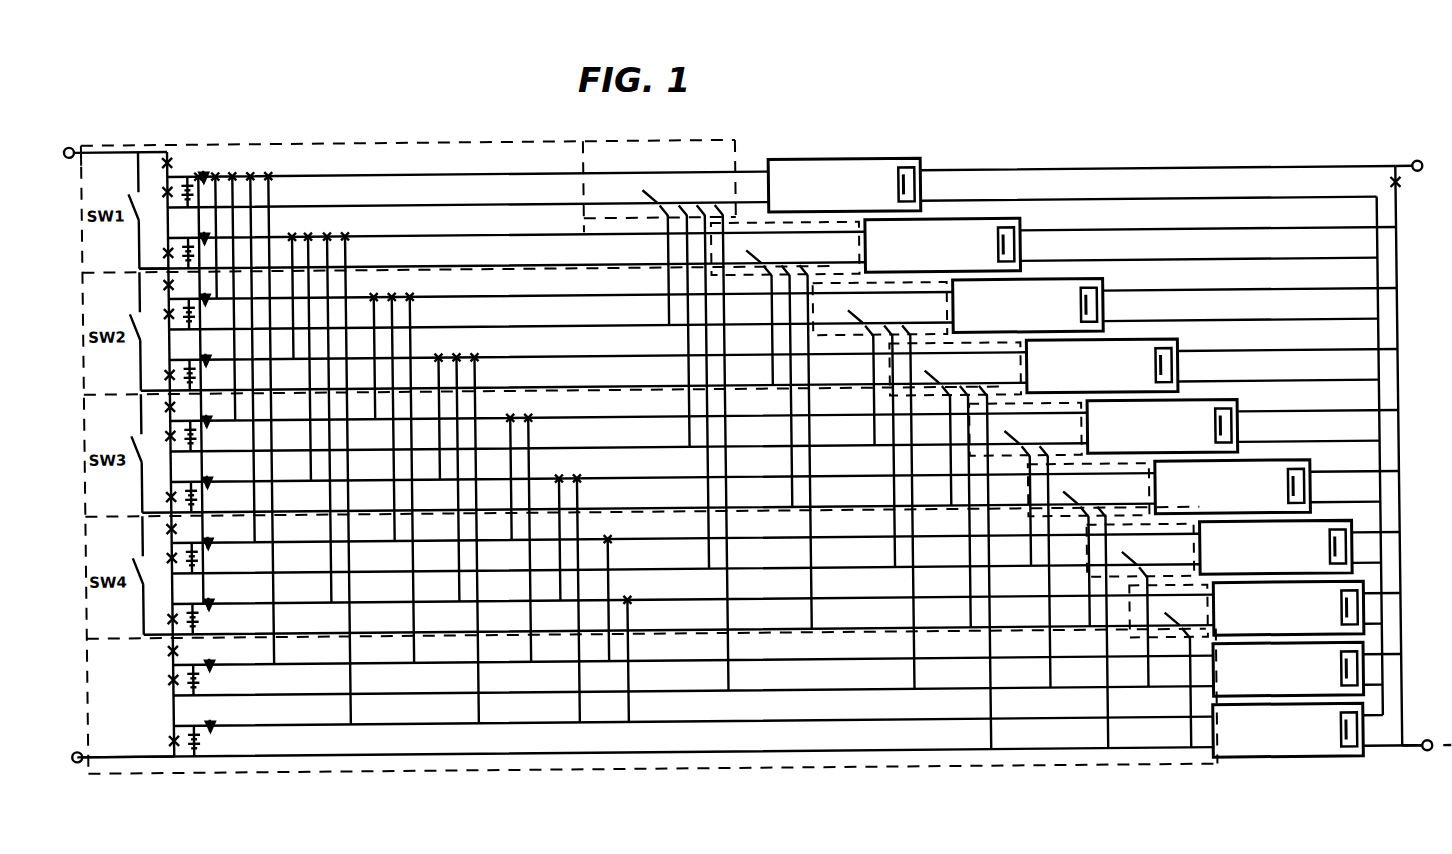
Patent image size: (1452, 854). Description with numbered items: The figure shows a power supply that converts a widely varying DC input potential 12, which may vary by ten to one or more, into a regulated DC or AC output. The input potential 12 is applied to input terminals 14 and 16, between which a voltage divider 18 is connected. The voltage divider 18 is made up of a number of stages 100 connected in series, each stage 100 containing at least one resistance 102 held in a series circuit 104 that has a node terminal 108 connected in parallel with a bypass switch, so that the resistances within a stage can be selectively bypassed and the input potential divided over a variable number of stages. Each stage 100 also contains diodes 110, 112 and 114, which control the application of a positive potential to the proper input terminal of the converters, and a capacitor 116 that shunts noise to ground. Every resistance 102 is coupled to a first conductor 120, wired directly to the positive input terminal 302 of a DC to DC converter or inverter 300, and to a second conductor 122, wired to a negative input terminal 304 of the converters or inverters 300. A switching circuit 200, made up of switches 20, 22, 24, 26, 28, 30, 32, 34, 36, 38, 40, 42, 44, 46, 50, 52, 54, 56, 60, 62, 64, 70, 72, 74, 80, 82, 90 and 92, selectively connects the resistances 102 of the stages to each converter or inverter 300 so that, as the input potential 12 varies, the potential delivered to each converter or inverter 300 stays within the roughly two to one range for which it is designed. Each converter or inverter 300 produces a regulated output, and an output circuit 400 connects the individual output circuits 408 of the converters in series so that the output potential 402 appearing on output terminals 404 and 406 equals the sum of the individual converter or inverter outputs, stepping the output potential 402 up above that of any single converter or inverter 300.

The variable DC input potential 12 is at (74, 174).
The input terminal 14 is at (73, 147).
The input terminal 16 is at (72, 762).
The voltage divider 18 is at (334, 138).
The switch 20 is at (617, 185).
The switch 22 is at (620, 217).
The switch 24 is at (656, 190).
The switch 26 is at (694, 188).
The switch 28 is at (726, 190).
The switch 30 is at (765, 245).
The switch 32 is at (746, 272).
The switch 34 is at (797, 245).
The switch 36 is at (830, 245).
The switch 38 is at (850, 282).
The switch 40 is at (864, 307).
The switch 42 is at (848, 336).
The switch 44 is at (891, 306).
The switch 46 is at (913, 307).
The switch 50 is at (944, 367).
The switch 52 is at (932, 401).
The switch 54 is at (970, 367).
The switch 56 is at (996, 366).
The switch 60 is at (1020, 432).
The switch 62 is at (1009, 478).
The switch 64 is at (1050, 432).
The switch 70 is at (1079, 490).
The switch 72 is at (1103, 486).
The switch 74 is at (1119, 514).
The switch 80 is at (1139, 552).
The switch 82 is at (1157, 576).
The switch 90 is at (1178, 607).
The switch 92 is at (1173, 656).
The stage 100 is at (88, 252).
The resistance 102 is at (212, 466).
The series circuit 104 is at (201, 137).
The node terminal 108 is at (138, 150).
The diode 110 is at (169, 158).
The diode 112 is at (222, 444).
The diode 114 is at (272, 177).
The capacitor 116 is at (164, 193).
The first conductor 120 is at (450, 170).
The second conductor 122 is at (438, 193).
The switching circuit 200 is at (662, 144).
The DC to DC converter or inverter 300 is at (850, 164).
The positive input terminal 302 is at (959, 430).
The negative input terminal 304 is at (753, 134).
The output circuit 400 is at (1398, 278).
The output potential 402 is at (1432, 184).
The output terminal 404 is at (1392, 142).
The output terminal 406 is at (1420, 762).
The individual output circuit 408 is at (908, 172).